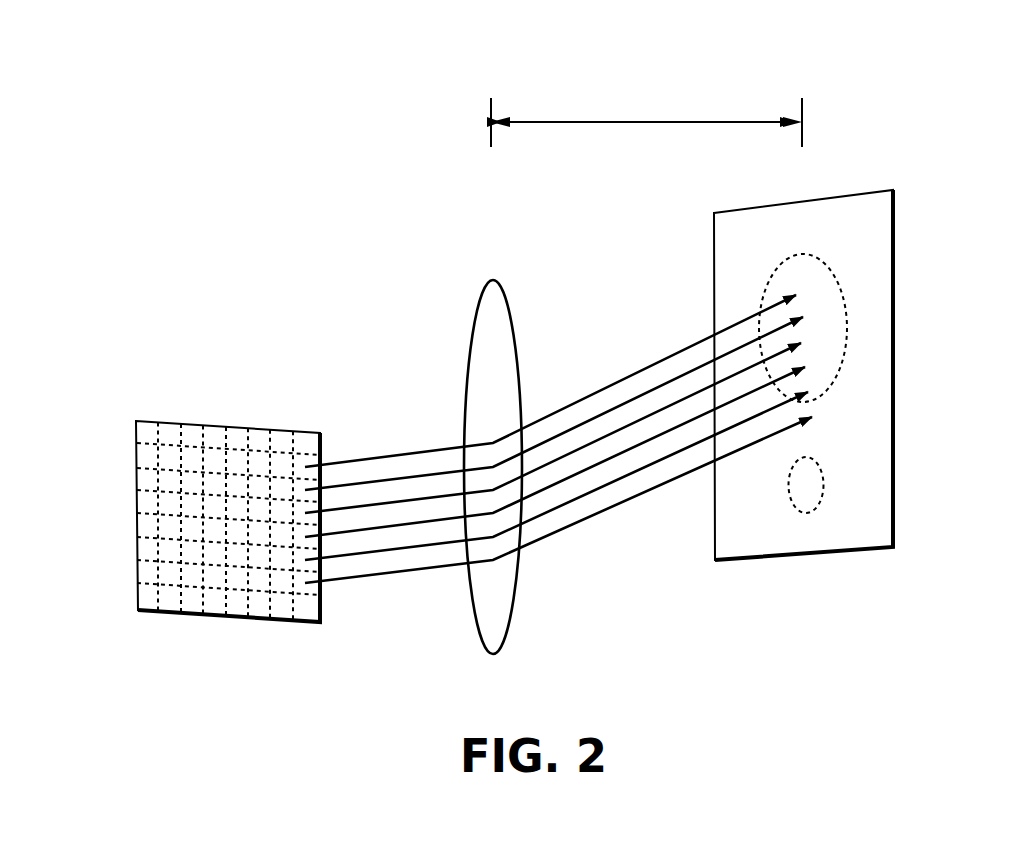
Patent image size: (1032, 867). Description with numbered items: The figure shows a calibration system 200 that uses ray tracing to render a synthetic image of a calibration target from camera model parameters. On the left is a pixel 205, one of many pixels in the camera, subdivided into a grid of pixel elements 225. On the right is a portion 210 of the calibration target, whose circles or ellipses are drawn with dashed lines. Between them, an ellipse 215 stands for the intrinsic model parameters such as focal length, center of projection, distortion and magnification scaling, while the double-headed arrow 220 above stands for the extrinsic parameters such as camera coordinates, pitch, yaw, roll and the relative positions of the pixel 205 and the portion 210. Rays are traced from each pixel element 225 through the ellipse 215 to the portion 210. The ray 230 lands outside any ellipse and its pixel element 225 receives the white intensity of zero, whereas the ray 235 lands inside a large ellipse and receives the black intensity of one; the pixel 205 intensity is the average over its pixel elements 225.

The calibration system 200 is at (937, 52).
The pixel 205 is at (136, 479).
The portion of calibration target 210 is at (895, 386).
The ellipse 215 is at (490, 280).
The double-headed arrow 220 is at (668, 120).
The pixel element 225 is at (192, 440).
The ray 230 is at (430, 568).
The ray 235 is at (427, 450).